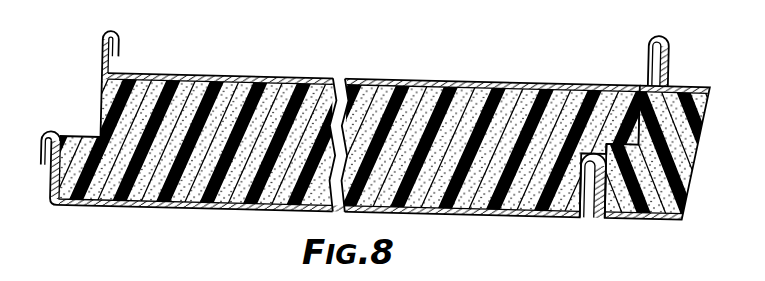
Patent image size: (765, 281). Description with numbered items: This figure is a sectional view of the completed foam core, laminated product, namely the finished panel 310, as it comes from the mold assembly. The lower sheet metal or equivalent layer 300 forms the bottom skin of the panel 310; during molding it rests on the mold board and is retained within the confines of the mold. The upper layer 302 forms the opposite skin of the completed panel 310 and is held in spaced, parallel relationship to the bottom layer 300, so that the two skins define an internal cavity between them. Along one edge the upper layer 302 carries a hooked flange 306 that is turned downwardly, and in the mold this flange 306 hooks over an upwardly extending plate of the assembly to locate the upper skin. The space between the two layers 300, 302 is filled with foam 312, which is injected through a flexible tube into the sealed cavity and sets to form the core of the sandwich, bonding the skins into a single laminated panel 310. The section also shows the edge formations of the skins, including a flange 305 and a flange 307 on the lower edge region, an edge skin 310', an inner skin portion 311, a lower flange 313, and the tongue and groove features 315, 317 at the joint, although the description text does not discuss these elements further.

The lower sheet metal layer 300 is at (516, 215).
The upper layer 302 is at (300, 78).
The upper hook flange 305 is at (118, 50).
The hooked flange 306 is at (668, 55).
The lower hook flange 307 is at (100, 52).
The completed panel 310 is at (349, 119).
The outer skin of adjacent panel 310' is at (700, 74).
The inner skin of adjacent panel 311 is at (634, 216).
The foam 312 is at (704, 122).
The lower hook flange of adjacent panel 313 is at (600, 194).
The tongue 315 is at (638, 142).
The groove 317 is at (640, 150).